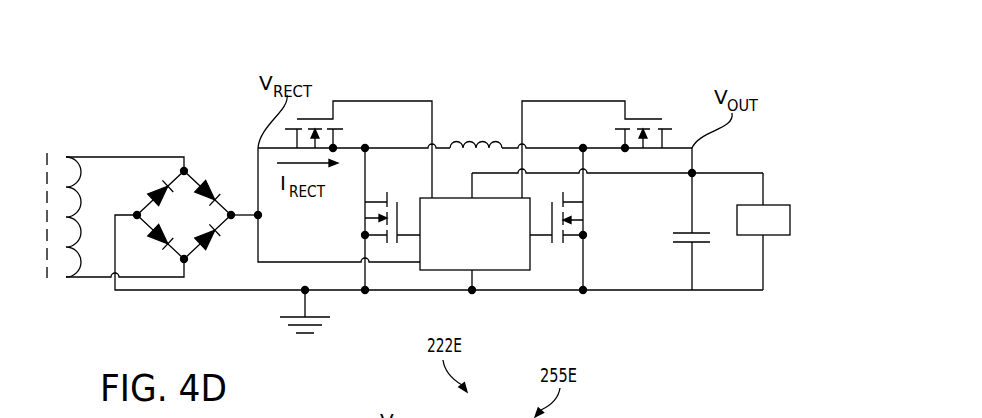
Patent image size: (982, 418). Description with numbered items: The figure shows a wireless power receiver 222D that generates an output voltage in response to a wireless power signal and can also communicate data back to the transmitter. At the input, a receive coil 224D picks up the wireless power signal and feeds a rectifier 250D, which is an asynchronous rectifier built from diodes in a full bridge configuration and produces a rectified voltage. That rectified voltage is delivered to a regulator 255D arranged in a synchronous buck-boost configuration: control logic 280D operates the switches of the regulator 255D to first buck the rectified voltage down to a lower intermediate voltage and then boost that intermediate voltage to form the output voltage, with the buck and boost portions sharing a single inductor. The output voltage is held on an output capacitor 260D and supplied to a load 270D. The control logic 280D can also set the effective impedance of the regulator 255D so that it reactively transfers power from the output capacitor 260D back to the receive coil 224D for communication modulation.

The receive coil 224D is at (93, 280).
The rectifier 250D is at (208, 155).
The wireless power receiver 222D is at (482, 94).
The regulator 255D is at (574, 76).
The control logic 280D is at (500, 270).
The output capacitor 260D is at (705, 242).
The load 270D is at (790, 215).